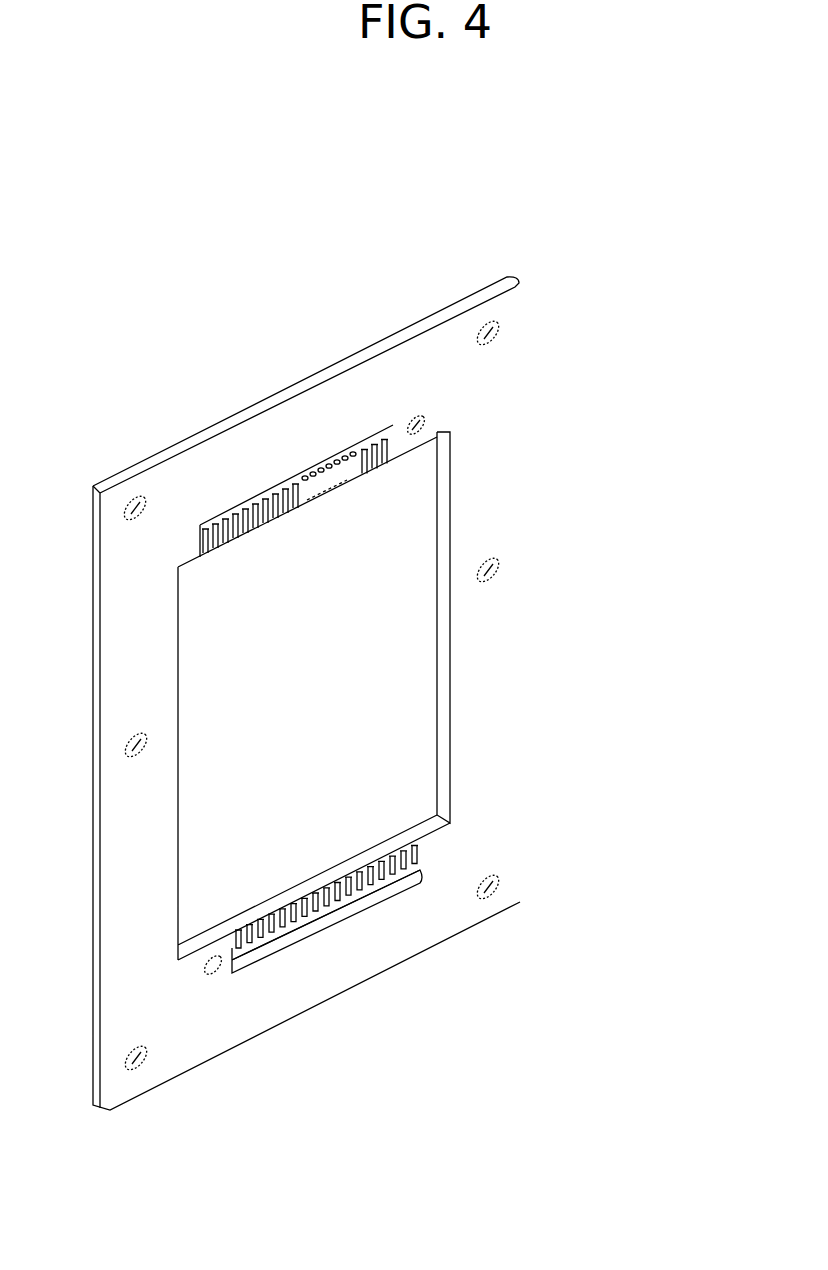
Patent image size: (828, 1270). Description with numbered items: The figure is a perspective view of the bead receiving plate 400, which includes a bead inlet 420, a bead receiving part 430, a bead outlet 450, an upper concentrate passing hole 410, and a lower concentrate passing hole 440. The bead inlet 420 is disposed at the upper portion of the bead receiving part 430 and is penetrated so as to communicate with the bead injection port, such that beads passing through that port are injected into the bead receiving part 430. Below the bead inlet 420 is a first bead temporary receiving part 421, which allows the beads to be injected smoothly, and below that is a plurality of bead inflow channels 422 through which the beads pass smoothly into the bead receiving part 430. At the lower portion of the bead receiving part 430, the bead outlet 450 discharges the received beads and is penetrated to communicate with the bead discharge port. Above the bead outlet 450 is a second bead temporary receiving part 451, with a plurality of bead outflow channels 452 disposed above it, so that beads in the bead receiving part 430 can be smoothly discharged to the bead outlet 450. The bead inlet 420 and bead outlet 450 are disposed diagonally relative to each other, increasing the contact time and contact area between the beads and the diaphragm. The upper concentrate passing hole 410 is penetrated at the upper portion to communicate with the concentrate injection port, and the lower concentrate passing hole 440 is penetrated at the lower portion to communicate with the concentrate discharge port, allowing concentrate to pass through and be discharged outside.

The bead receiving plate 400 is at (236, 240).
The upper concentrate passing hole 410 is at (420, 420).
The bead inlet 420 is at (202, 522).
The first bead temporary receiving part 421 is at (355, 438).
The bead inflow channels 422 is at (295, 484).
The bead receiving part 430 is at (407, 703).
The lower concentrate passing hole 440 is at (212, 968).
The bead outlet 450 is at (413, 893).
The second bead temporary receiving part 451 is at (283, 947).
The bead outflow channels 452 is at (347, 905).